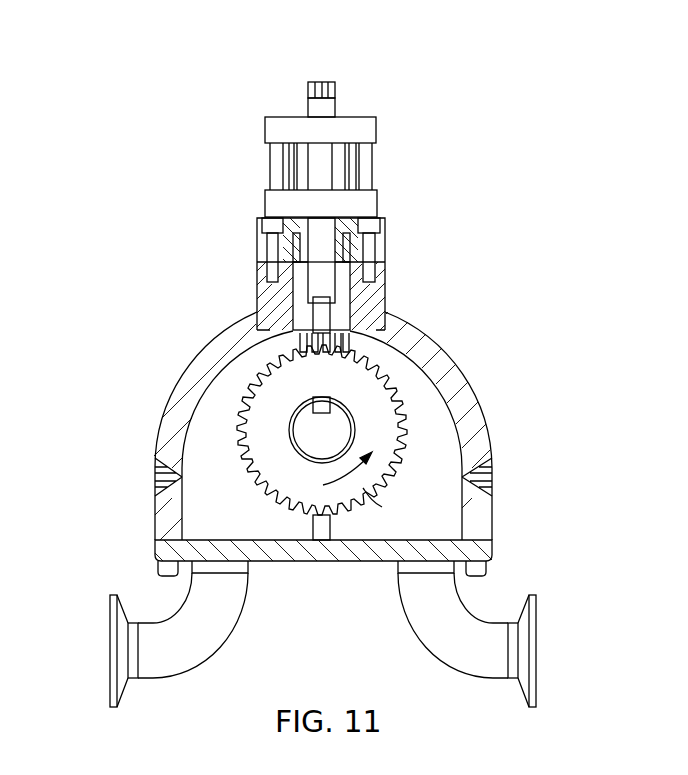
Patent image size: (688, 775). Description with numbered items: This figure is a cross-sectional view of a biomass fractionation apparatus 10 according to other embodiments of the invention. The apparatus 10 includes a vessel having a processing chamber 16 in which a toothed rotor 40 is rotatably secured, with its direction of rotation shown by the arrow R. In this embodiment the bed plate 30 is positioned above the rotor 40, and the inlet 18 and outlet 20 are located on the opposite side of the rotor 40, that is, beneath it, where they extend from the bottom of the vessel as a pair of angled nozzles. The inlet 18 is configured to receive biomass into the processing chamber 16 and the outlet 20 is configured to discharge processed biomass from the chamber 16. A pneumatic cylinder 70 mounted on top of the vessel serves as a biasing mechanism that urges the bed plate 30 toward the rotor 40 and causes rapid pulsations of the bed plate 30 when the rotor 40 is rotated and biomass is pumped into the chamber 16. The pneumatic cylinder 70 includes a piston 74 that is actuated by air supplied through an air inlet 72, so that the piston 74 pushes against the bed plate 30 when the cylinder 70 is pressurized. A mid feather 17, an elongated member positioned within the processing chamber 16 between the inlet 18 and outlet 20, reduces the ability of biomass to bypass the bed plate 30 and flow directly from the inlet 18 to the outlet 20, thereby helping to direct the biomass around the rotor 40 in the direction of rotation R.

The biomass fractionation apparatus 10 is at (468, 188).
The processing chamber 16 is at (193, 433).
The mid feather 17 is at (321, 541).
The inlet 18 is at (536, 638).
The outlet 20 is at (110, 645).
The bed plate 30 is at (336, 318).
The rotor 40 is at (287, 473).
The pneumatic cylinder 70 is at (248, 160).
The air inlet 72 is at (316, 82).
The piston 74 is at (317, 321).